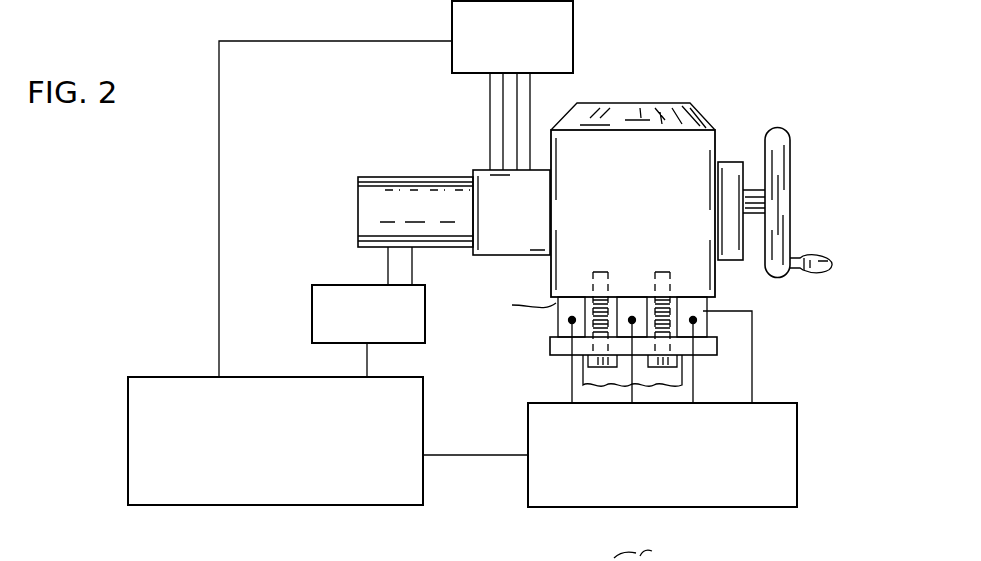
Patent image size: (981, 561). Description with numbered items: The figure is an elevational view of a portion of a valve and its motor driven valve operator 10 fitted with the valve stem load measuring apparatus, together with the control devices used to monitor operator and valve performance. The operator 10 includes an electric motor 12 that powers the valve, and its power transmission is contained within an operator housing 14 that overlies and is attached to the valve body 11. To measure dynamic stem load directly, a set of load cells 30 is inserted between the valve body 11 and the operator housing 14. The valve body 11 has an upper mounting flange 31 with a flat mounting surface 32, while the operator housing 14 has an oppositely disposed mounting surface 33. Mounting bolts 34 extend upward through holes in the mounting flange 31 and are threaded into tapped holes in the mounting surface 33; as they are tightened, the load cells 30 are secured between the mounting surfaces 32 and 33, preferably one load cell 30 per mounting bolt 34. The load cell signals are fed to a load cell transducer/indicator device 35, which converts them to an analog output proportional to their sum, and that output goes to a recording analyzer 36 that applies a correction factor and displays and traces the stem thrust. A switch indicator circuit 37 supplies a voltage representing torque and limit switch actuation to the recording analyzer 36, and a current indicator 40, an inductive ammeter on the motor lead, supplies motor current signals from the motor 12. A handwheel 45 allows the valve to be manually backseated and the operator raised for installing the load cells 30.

The motor driven valve operator 10 is at (657, 181).
The valve body 11 is at (590, 375).
The electric motor 12 is at (417, 180).
The operator housing 14 is at (623, 143).
The load cells 30 is at (556, 313).
The upper mounting flange 31 is at (710, 346).
The flat mounting surface 32 is at (703, 330).
The mounting surface 33 is at (519, 308).
The mounting bolts 34 is at (597, 324).
The load cell transducer/indicator device 35 is at (756, 500).
The recording analyzer 36 is at (397, 503).
The switch indicator circuit 37 is at (573, 25).
The current indicator 40 is at (330, 285).
The handwheel 45 is at (786, 220).